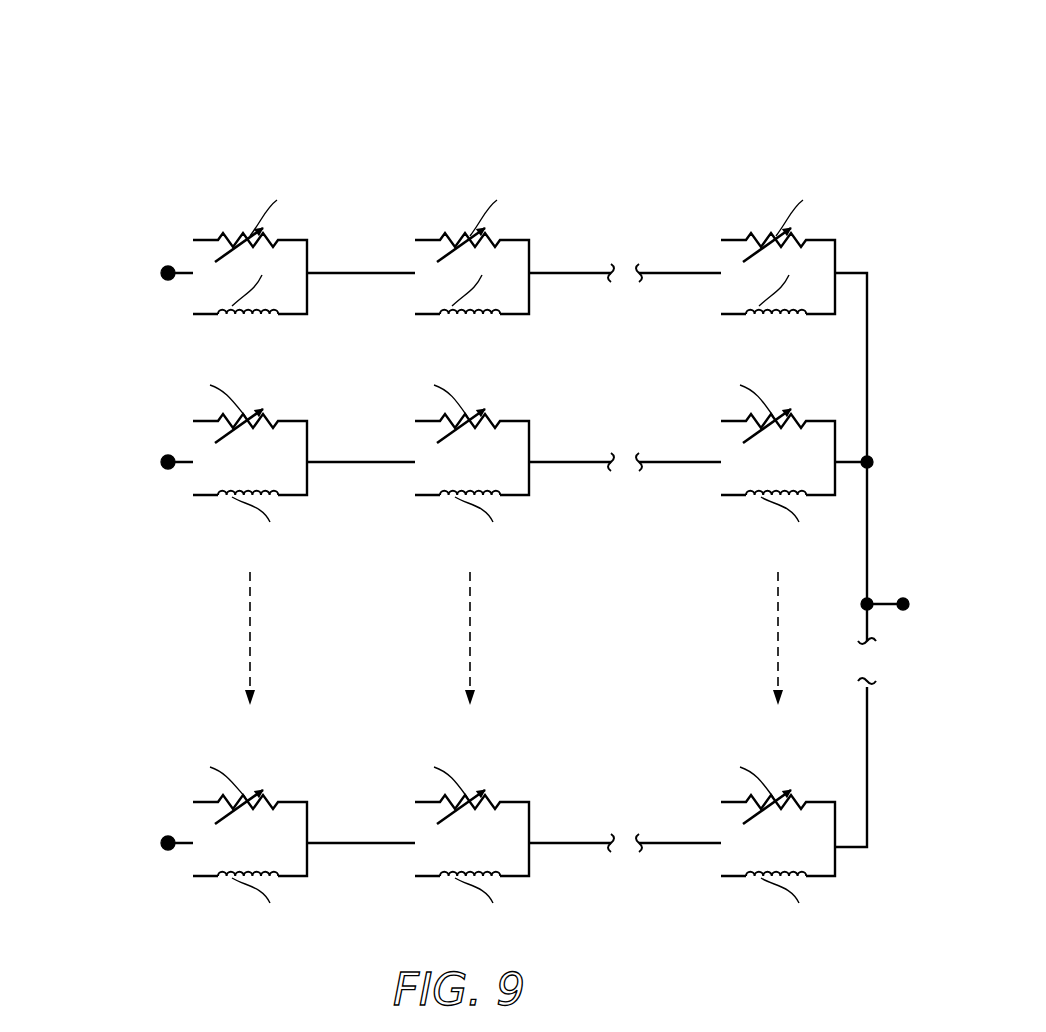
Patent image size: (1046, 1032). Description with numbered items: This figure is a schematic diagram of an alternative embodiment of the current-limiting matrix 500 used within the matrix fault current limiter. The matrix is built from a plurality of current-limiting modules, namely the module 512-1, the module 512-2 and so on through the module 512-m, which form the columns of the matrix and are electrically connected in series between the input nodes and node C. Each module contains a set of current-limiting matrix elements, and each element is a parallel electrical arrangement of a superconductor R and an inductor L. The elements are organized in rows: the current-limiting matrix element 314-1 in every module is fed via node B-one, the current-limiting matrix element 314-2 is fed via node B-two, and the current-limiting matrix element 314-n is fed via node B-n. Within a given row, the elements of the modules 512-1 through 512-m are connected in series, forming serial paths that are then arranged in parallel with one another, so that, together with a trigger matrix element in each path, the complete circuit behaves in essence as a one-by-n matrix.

The current-limiting matrix 500 is at (272, 78).
The current-limiting module 512-1 is at (332, 173).
The current-limiting module 512-2 is at (553, 173).
The current-limiting module 512-m is at (858, 173).
The current-limiting matrix element 314-1 is at (697, 289).
The current-limiting matrix element 314-2 is at (697, 478).
The current-limiting matrix element 314-n is at (697, 862).